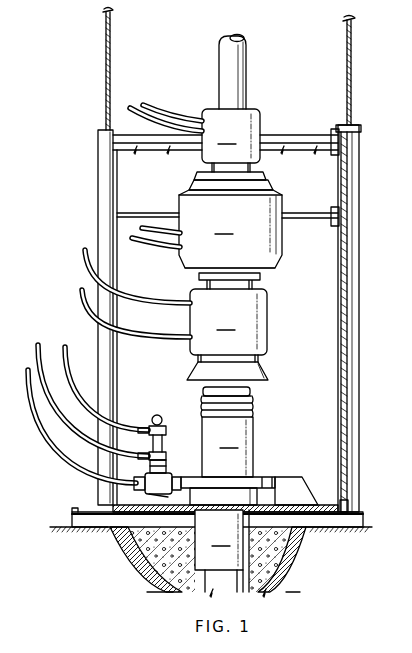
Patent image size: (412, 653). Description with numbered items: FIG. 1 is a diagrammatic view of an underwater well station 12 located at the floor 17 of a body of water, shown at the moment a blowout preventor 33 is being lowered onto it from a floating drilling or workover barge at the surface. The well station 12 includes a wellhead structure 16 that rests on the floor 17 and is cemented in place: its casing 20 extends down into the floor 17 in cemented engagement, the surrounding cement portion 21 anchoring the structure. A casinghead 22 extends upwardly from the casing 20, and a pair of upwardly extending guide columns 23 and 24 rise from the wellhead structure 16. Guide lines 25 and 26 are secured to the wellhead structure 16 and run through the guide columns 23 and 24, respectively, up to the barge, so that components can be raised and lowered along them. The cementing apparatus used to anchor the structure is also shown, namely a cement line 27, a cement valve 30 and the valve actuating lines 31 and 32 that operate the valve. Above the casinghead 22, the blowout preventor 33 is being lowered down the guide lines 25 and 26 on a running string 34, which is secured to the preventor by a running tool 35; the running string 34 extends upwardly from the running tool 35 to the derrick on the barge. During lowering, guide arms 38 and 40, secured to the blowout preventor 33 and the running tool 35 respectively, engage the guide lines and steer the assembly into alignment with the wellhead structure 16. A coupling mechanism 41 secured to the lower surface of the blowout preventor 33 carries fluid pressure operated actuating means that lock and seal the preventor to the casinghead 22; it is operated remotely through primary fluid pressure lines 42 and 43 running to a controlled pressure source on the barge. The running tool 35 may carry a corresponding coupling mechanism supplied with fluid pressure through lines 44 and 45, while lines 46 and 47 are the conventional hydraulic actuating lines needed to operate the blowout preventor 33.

The well station 12 is at (362, 359).
The wellhead structure 16 is at (362, 520).
The floor 17 is at (118, 537).
The casing 20 is at (230, 553).
The cement portion 21 is at (285, 555).
The casinghead 22 is at (249, 446).
The guide column 23 is at (360, 219).
The guide column 24 is at (100, 193).
The guide line 25 is at (355, 27).
The guide line 26 is at (111, 30).
The cement line 27 is at (55, 449).
The cement valve 30 is at (165, 475).
The valve actuating line 31 is at (68, 346).
The valve actuating line 32 is at (42, 344).
The blowout preventor 33 is at (230, 230).
The running string 34 is at (242, 63).
The running tool 35 is at (231, 140).
The guide arm 38 is at (324, 212).
The guide arm 40 is at (278, 138).
The coupling mechanism 41 is at (227, 334).
The primary fluid pressure line 42 is at (151, 337).
The primary fluid pressure line 43 is at (153, 300).
The fluid pressure line 44 is at (130, 106).
The fluid pressure line 45 is at (154, 104).
The hydraulic actuating line 46 is at (151, 248).
The hydraulic actuating line 47 is at (153, 226).